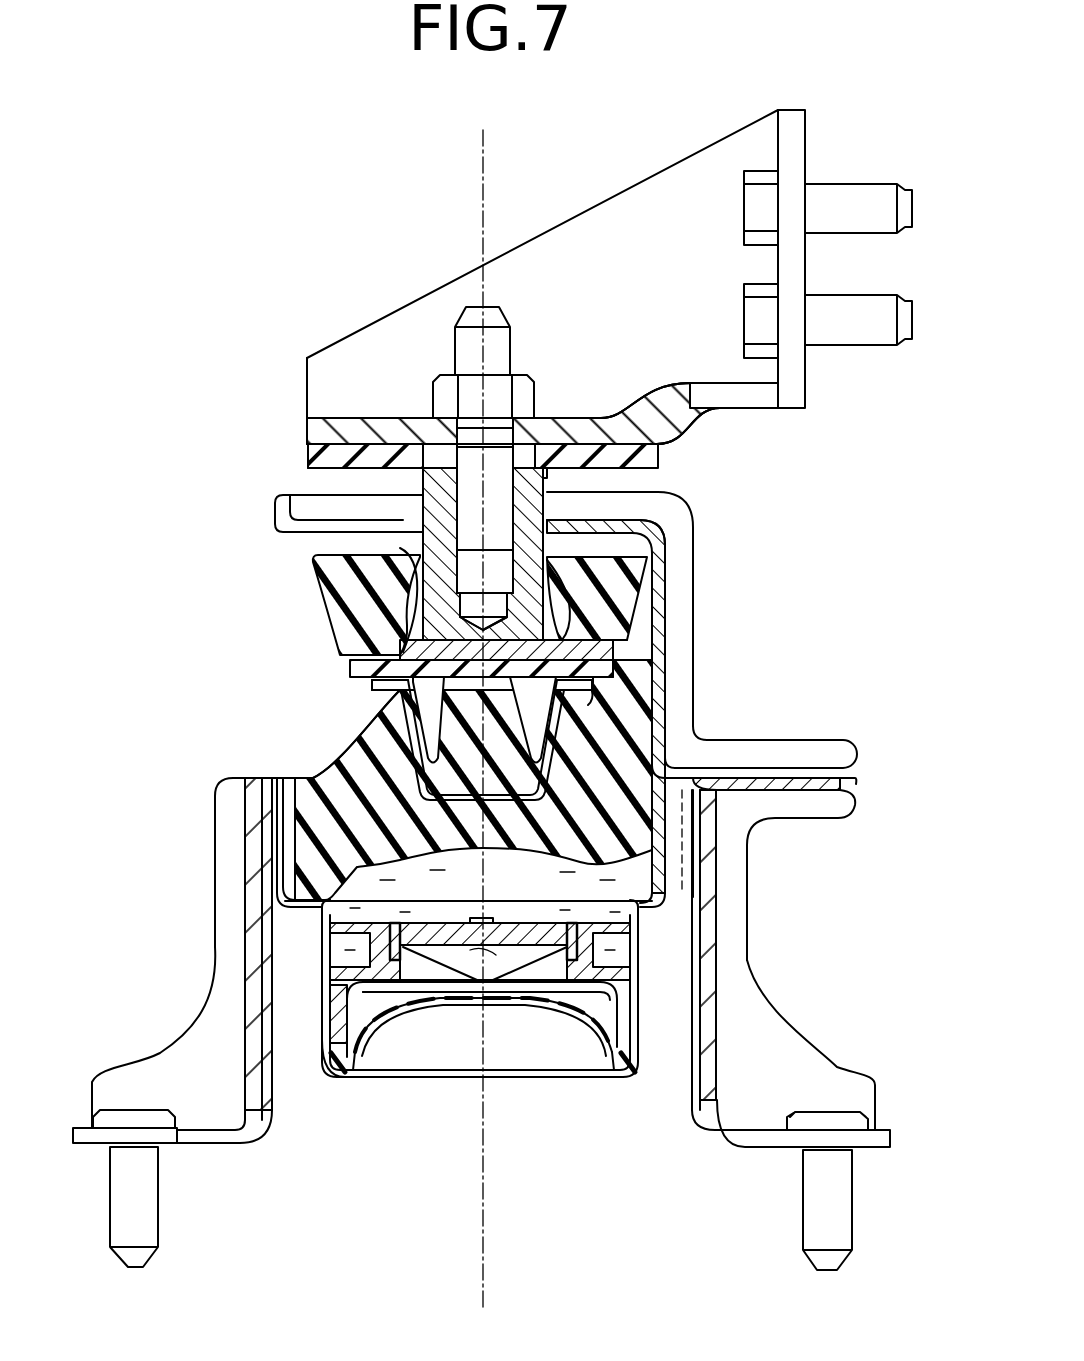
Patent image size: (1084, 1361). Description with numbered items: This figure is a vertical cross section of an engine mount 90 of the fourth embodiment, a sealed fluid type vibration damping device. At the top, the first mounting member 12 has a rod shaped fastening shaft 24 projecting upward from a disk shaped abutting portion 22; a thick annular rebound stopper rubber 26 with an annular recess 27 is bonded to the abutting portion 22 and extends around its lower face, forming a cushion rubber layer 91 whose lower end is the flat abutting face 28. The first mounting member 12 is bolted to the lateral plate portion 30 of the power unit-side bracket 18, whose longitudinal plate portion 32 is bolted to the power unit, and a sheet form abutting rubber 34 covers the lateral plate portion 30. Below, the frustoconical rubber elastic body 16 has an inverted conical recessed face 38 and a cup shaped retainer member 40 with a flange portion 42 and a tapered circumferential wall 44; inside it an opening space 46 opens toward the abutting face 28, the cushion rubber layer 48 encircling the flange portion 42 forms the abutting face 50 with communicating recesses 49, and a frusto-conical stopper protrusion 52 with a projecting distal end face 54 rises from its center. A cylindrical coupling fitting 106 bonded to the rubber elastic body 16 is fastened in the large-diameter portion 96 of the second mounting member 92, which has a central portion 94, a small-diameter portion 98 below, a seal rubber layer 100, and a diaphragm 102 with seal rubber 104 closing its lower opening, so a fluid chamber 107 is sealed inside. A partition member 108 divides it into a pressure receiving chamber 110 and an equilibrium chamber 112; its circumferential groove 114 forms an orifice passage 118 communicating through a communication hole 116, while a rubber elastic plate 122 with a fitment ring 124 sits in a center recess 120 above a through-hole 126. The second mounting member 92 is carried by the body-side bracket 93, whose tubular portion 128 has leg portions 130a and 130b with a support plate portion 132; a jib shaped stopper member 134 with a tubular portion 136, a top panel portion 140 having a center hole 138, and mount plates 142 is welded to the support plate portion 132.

The first mounting member 12 is at (412, 488).
The rubber elastic body 16 is at (196, 934).
The power unit-side bracket 18 is at (609, 286).
The abutting portion 22 is at (329, 594).
The fastening shaft 24 is at (535, 490).
The rebound stopper rubber 26 is at (333, 578).
The annular recess 27 is at (425, 545).
The abutting face 28 is at (664, 612).
The lateral plate portion 30 is at (749, 394).
The longitudinal plate portion 32 is at (791, 381).
The abutting rubber 34 is at (317, 453).
The recessed face 38 is at (313, 790).
The retainer member 40 is at (516, 780).
The flange portion 42 is at (490, 724).
The tapered circumferential wall 44 is at (400, 783).
The opening space 46 is at (433, 712).
The cushion rubber layer 48 is at (380, 676).
The communicating recesses 49 is at (610, 690).
The abutting face 50 is at (375, 640).
The stopper protrusion 52 is at (665, 740).
The projecting distal end face 54 is at (590, 622).
The engine mount 90 is at (210, 465).
The cushion rubber layer 91 is at (563, 635).
The second mounting member 92 is at (316, 1046).
The body-side bracket 93 is at (780, 968).
The portion 94 is at (399, 1006).
The large-diameter portion 96 is at (255, 807).
The small-diameter portion 98 is at (318, 992).
The seal rubber layer 100 is at (257, 838).
The diaphragm 102 is at (402, 1015).
The seal rubber 104 is at (418, 1050).
The coupling fitting 106 is at (670, 823).
The fluid chamber 107 is at (683, 732).
The partition member 108 is at (340, 977).
The pressure receiving chamber 110 is at (500, 894).
The equilibrium chamber 112 is at (362, 1013).
The circumferential groove 114 is at (482, 1027).
The communication hole 116 is at (590, 1020).
The orifice passage 118 is at (627, 940).
The center recess 120 is at (463, 957).
The rubber elastic plate 122 is at (492, 965).
The fitment ring 124 is at (627, 963).
The through-hole 126 is at (497, 990).
The tubular portion 128 is at (270, 870).
The leg portion 130a is at (180, 1018).
The leg portions 130b is at (775, 1000).
The support plate portion 132 is at (833, 817).
The stopper member 134 is at (715, 692).
The tubular portion 136 is at (657, 573).
The center hole 138 is at (305, 507).
The top panel portion 140 is at (420, 498).
The mount plates 142 is at (800, 768).